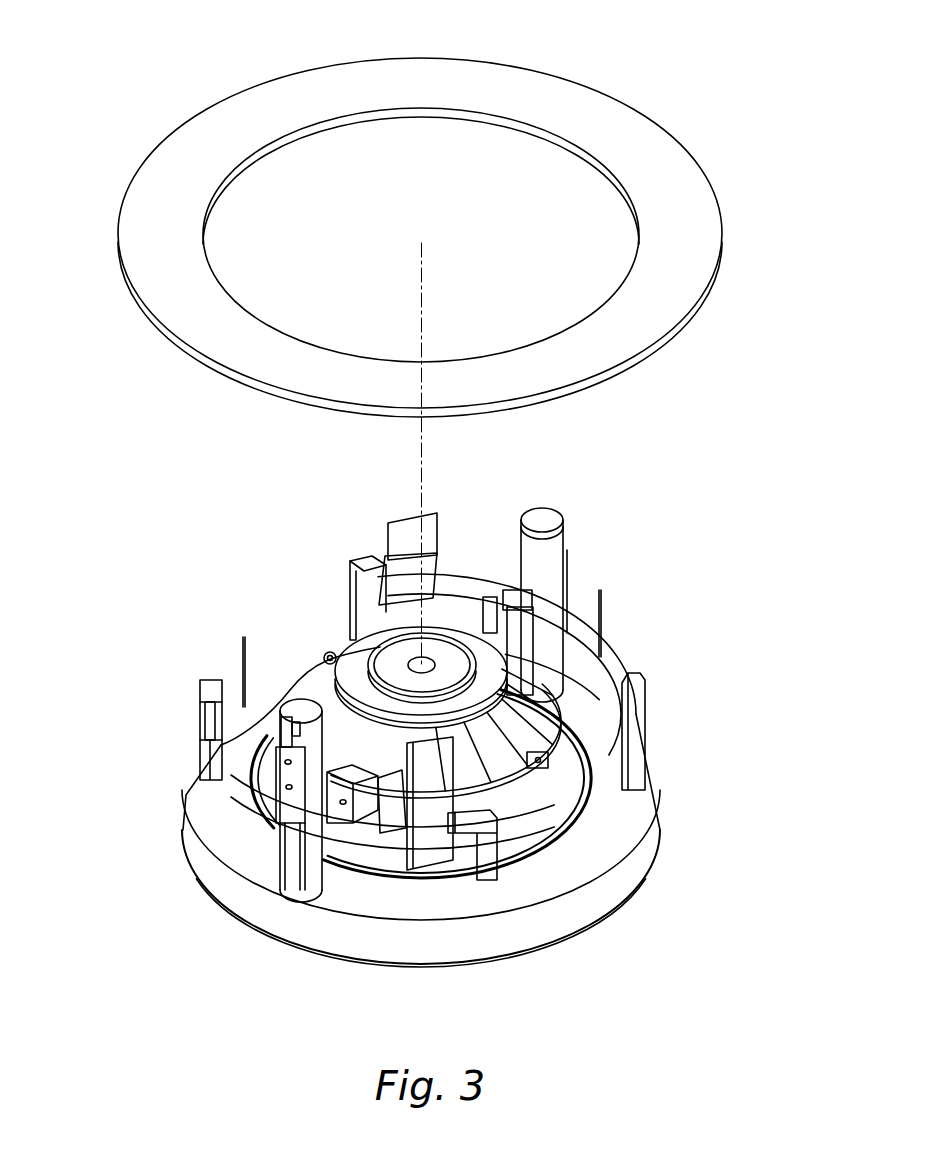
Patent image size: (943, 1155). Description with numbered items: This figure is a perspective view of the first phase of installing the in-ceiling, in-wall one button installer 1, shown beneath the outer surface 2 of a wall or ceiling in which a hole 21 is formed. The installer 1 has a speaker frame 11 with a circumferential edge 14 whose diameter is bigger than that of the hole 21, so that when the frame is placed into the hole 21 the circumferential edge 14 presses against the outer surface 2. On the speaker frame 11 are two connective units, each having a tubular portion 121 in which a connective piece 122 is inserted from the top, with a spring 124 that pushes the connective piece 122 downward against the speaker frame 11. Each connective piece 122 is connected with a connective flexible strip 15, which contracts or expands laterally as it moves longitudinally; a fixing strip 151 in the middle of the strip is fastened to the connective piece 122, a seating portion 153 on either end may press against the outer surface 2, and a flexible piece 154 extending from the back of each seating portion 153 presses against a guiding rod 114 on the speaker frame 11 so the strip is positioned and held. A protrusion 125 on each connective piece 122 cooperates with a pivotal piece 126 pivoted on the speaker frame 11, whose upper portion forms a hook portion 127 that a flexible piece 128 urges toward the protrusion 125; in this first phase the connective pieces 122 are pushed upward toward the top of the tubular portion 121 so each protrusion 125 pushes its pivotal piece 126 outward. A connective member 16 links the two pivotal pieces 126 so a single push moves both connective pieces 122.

The in-ceiling, in-wall one button installer 1 is at (668, 685).
The outer surface 2 is at (676, 183).
The hole 21 is at (293, 172).
The speaker frame 11 is at (558, 858).
The guiding rod 114 is at (200, 728).
The tubular portion 121 is at (262, 865).
The connective piece 122 is at (222, 742).
The spring 124 is at (280, 727).
The protrusion 125 is at (320, 890).
The pivotal piece 126 is at (350, 808).
The hook portion 127 is at (335, 798).
The flexible piece 128 is at (383, 815).
The circumferential edge 14 is at (648, 827).
The connective flexible strip 15 is at (283, 813).
The fixing strip 151 is at (255, 848).
The seating portion 153 is at (213, 740).
The flexible piece 154 is at (252, 700).
The connective member 16 is at (343, 650).